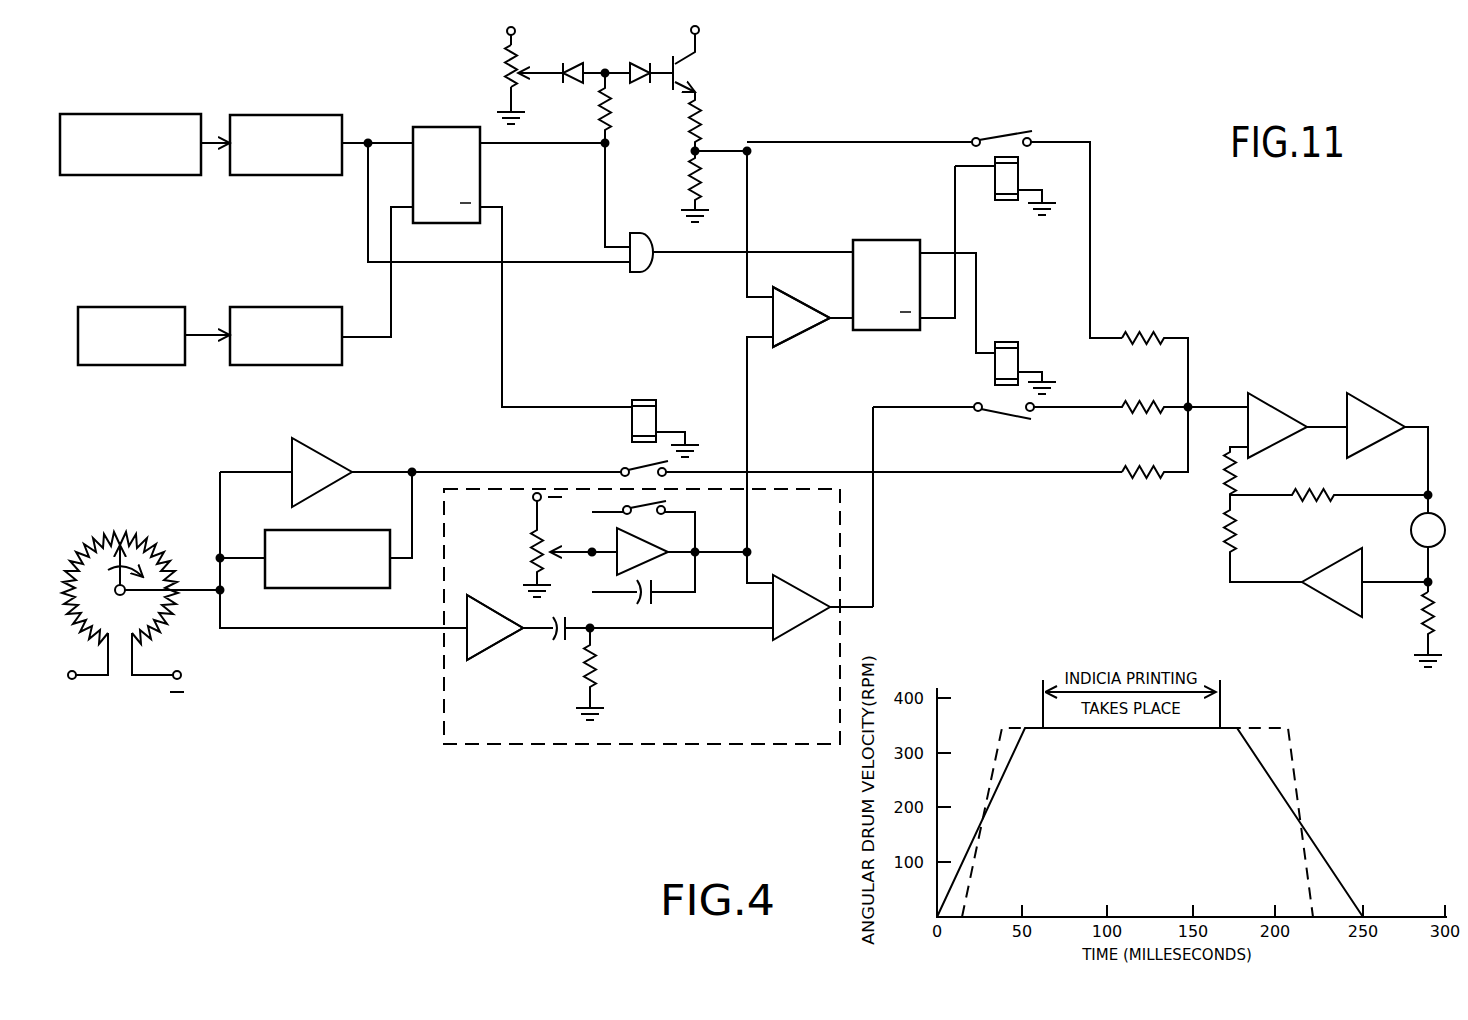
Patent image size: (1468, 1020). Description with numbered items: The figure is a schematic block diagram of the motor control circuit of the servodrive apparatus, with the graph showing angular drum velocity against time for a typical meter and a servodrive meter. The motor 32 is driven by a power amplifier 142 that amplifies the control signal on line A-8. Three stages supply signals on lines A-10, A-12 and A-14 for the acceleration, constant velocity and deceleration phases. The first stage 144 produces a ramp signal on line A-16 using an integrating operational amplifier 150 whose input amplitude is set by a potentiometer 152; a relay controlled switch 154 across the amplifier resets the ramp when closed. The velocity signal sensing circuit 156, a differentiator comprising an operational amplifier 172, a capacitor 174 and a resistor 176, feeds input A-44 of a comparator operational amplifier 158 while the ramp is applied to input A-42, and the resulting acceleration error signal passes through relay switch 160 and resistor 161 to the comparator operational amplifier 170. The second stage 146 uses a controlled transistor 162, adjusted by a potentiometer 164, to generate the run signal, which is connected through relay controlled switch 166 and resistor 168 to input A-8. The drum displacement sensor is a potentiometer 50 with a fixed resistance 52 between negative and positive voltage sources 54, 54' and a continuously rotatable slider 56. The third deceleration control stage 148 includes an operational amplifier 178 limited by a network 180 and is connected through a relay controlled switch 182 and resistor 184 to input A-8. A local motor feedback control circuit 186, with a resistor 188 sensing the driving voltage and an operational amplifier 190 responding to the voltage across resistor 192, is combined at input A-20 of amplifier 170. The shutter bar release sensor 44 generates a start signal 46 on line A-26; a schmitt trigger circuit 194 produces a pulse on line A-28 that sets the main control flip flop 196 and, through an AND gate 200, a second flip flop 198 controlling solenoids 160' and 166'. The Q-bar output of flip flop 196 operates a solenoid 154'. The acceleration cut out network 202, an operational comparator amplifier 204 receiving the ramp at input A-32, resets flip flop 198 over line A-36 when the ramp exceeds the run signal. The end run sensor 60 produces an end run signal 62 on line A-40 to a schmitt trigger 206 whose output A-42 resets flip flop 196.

The motor start signal 46 is at (156, 114).
The shutter bar release sensor 44 is at (118, 175).
The start signal line A-26 is at (214, 145).
The schmitt trigger circuit 194 is at (322, 175).
The pulse line A-28 is at (352, 142).
The main control flip flop 196 is at (480, 172).
The potentiometer 164 is at (525, 72).
The second stage 146 is at (716, 65).
The controlled transistor 162 is at (698, 80).
The run signal line A-12 is at (812, 142).
The relay controlled switch 166 is at (1009, 114).
The solenoid 166' is at (1015, 186).
The AND gate 200 is at (648, 266).
The second flip flop 198 is at (884, 240).
The solenoid 160' is at (1035, 351).
The operational comparator amplifier 204 is at (792, 315).
The acceleration cut out network 202 is at (803, 352).
The comparator input A-32 is at (744, 336).
The comparator output line A-36 is at (849, 332).
The resistor 168 is at (1150, 330).
The resistor 161 is at (1138, 400).
The comparator input A-20 is at (1209, 420).
The control signal line A-8 is at (1210, 405).
The comparator operational amplifier 170 is at (1268, 424).
The power amplifier 142 is at (1387, 453).
The resistor 188 is at (1322, 502).
The motor 32 is at (1412, 528).
The operational amplifier 190 is at (1365, 582).
The local motor feedback control circuit 186 is at (1268, 594).
The resistor 192 is at (1420, 620).
The end run signal 62 is at (190, 330).
The end run sensor 60 is at (130, 365).
The end run signal line A-40 is at (200, 337).
The schmitt trigger 206 is at (310, 365).
The signal line A-42 is at (392, 337).
The solenoid 154' is at (675, 420).
The third deceleration control stage 148 is at (262, 460).
The operational amplifier 178 is at (354, 472).
The relay controlled switch 182 is at (640, 467).
The deceleration control signal line A-14 is at (1010, 473).
The resistor 184 is at (1138, 478).
The relay switch 160 is at (953, 427).
The acceleration signal line A-10 is at (1038, 410).
The potentiometer 50 is at (140, 522).
The continuously rotatable slider 56 is at (108, 553).
The fixed resistance 52 is at (173, 552).
The positive voltage source 54' is at (90, 686).
The negative voltage source 54 is at (186, 674).
The amplitude limiting network 180 is at (370, 588).
The first stage 144 is at (642, 635).
The potentiometer 152 is at (533, 545).
The integrating operational amplifier 150 is at (709, 577).
The relay controlled switch 154 is at (681, 512).
The ramp signal line A-16 is at (750, 528).
The operational amplifier 172 is at (495, 627).
The velocity signal sensing circuit 156 is at (532, 661).
The capacitor 174 is at (568, 618).
The resistor 176 is at (618, 674).
The comparator input A-44 is at (722, 628).
The comparator operational amplifier 158 is at (814, 607).